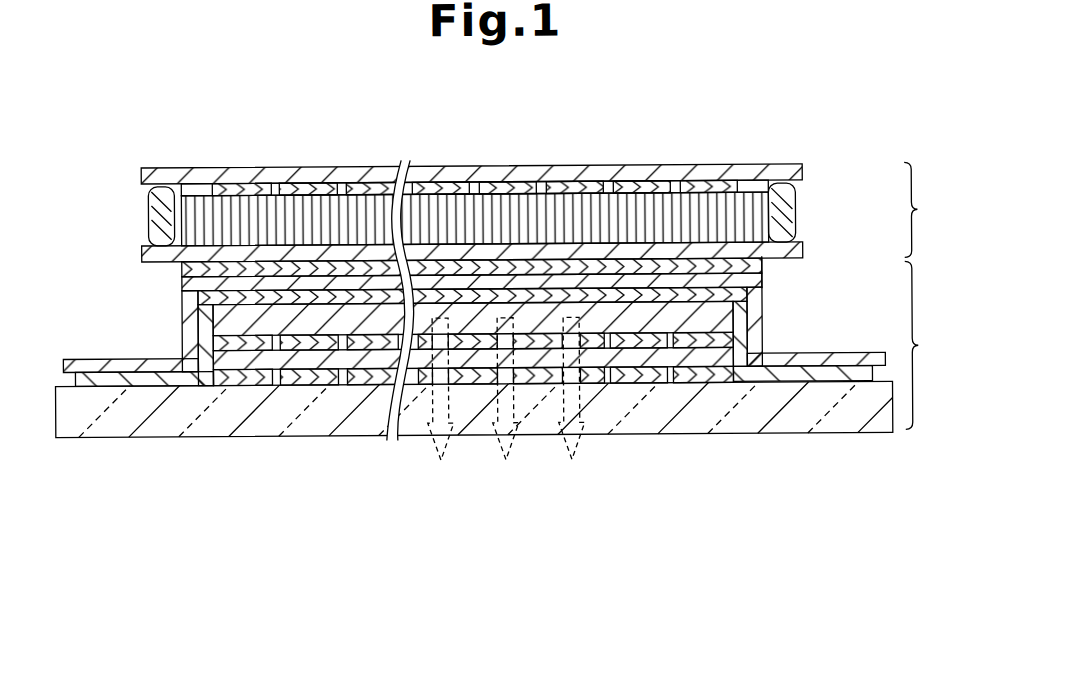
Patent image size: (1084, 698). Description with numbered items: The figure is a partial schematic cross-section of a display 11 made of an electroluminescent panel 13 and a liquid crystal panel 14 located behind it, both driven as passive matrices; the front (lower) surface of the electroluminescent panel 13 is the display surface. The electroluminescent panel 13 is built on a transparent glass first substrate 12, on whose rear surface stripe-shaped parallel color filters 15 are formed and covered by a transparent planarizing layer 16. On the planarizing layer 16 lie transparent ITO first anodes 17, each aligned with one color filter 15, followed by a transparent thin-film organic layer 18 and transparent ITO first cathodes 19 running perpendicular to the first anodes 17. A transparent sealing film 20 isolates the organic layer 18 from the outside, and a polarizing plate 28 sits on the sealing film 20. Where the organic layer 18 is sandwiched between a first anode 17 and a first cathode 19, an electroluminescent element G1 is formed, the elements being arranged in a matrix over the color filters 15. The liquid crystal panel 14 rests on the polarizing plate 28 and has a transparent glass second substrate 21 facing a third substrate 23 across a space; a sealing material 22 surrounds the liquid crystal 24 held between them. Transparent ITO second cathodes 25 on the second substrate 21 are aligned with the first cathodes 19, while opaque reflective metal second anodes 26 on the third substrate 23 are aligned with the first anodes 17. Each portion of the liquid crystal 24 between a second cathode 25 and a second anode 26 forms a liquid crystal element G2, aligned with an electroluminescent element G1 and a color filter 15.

The display 11 is at (717, 132).
The first substrate 12 is at (692, 430).
The electroluminescent panel 13 is at (933, 345).
The liquid crystal panel 14 is at (932, 209).
The color filters 15 is at (300, 386).
The planarizing layer 16 is at (247, 386).
The first anodes 17 is at (213, 340).
The organic layer 18 is at (200, 312).
The first cathodes 19 is at (183, 300).
The sealing film 20 is at (183, 287).
The second substrate 21 is at (803, 246).
The sealing material 22 is at (790, 200).
The third substrate 23 is at (757, 170).
The liquid crystal 24 is at (610, 223).
The second cathodes 25 is at (786, 222).
The second anodes 26 is at (514, 184).
The polarizing plate 28 is at (762, 268).
The electroluminescent elements G1 is at (360, 326).
The liquid crystal elements G2 is at (373, 218).